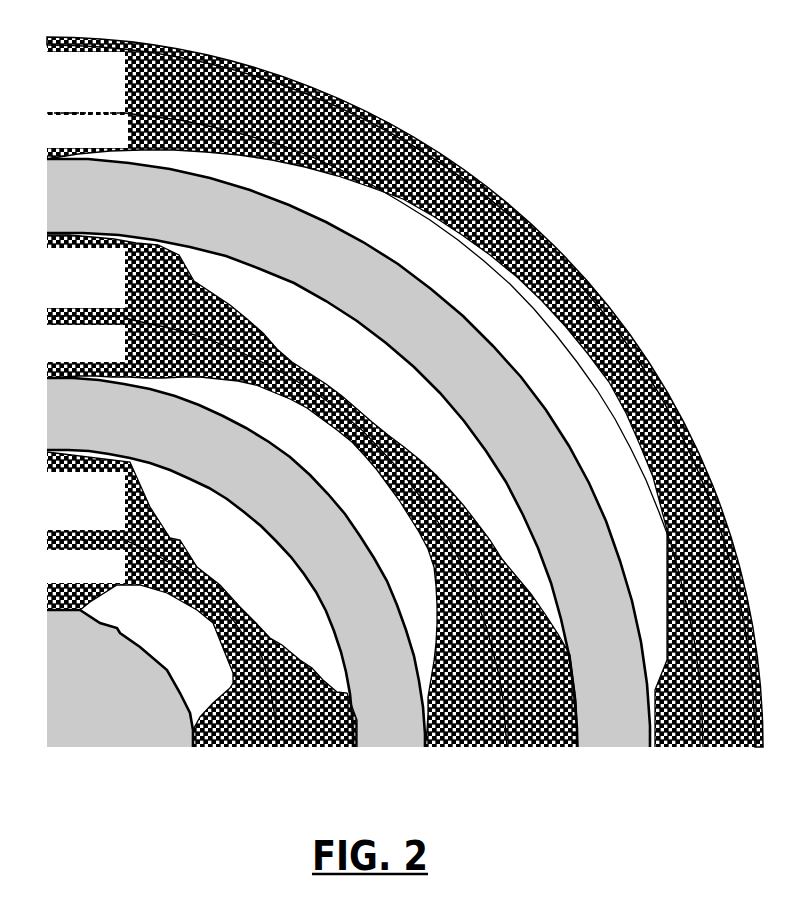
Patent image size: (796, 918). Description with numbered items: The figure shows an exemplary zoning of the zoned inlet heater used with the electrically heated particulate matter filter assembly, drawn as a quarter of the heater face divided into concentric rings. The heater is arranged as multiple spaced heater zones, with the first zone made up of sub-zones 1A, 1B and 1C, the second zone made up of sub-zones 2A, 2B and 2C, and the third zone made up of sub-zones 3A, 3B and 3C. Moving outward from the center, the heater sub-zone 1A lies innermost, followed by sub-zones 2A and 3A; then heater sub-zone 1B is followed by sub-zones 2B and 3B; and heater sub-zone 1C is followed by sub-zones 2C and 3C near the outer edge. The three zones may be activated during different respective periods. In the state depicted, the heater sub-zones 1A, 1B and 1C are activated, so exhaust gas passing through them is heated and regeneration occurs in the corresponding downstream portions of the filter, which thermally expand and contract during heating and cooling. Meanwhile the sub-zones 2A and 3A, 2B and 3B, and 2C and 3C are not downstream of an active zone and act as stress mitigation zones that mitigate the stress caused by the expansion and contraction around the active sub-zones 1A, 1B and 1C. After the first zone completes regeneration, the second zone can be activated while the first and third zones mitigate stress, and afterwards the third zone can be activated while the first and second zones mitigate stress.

The sub-zone 1A is at (120, 678).
The sub-zone 1B is at (236, 562).
The sub-zone 1C is at (348, 453).
The sub-zone 2A is at (162, 643).
The sub-zone 2B is at (277, 531).
The sub-zone 2C is at (375, 430).
The sub-zone 3A is at (202, 599).
The sub-zone 3B is at (312, 491).
The sub-zone 3C is at (401, 396).